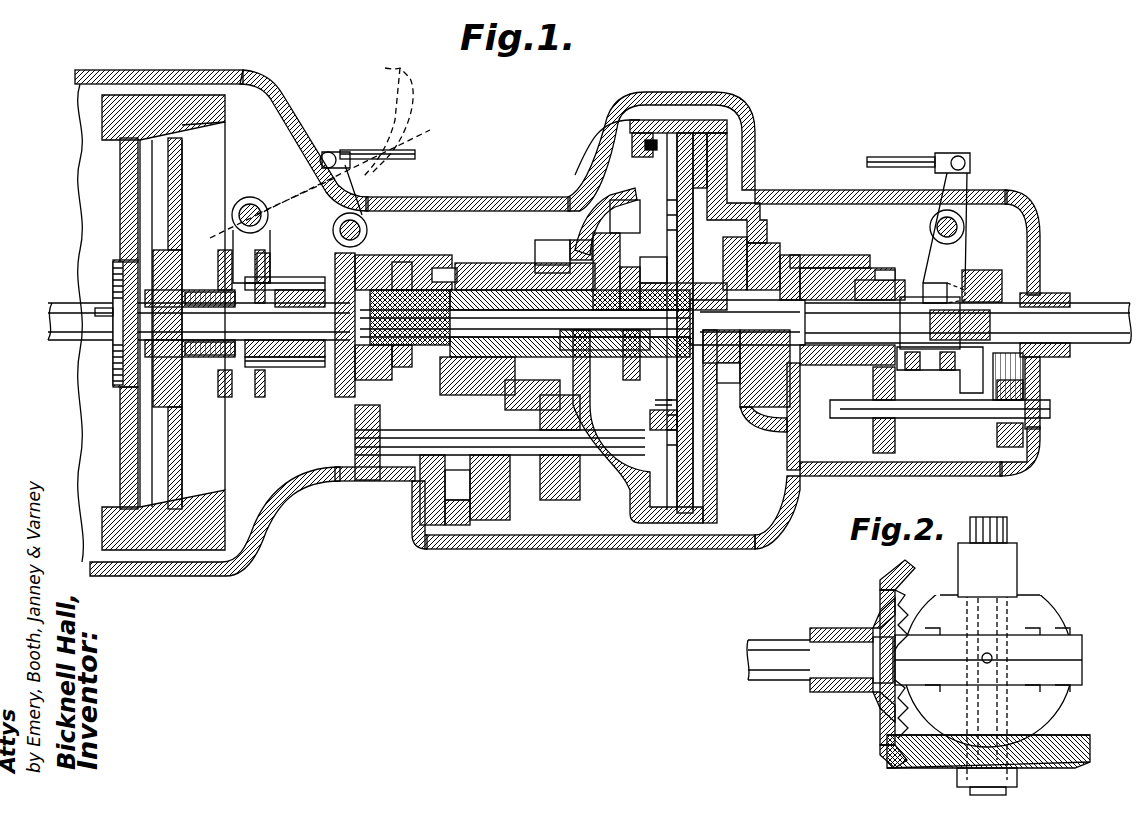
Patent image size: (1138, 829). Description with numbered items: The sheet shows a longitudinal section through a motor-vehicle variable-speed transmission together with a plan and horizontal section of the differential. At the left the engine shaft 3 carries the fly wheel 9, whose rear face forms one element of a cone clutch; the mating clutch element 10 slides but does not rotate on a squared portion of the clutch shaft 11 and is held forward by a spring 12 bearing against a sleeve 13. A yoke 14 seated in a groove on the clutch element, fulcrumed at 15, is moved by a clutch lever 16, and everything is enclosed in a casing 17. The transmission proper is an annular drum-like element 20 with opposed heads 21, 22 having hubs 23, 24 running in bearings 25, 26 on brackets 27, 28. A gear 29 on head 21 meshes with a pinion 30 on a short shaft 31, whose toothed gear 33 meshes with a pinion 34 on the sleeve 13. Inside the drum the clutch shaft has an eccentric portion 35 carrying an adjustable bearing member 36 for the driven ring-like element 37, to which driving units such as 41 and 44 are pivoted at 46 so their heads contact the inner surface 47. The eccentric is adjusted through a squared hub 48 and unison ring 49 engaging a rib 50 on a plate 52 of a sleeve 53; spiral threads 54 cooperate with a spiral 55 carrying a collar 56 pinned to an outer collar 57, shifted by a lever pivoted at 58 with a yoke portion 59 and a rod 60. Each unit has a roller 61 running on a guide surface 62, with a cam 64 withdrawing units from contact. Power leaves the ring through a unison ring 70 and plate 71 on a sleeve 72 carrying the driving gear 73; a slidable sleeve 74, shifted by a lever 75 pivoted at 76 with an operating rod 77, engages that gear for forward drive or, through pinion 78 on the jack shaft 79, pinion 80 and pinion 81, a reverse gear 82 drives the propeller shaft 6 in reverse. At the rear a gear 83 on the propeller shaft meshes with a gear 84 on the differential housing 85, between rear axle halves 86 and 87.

In FIG. 1, the engine shaft 3 is at (66, 304).
In FIG. 1, the propeller shaft 6 is at (1090, 312).
In FIG. 2, the propeller shaft 6 is at (775, 670).
In FIG. 1, the fly wheel 9 is at (152, 95).
In FIG. 1, the clutch element 10 is at (212, 138).
In FIG. 1, the clutch shaft 11 is at (298, 300).
In FIG. 1, the spring 12 is at (213, 288).
In FIG. 1, the sleeve 13 is at (262, 372).
In FIG. 1, the yoke 14 is at (262, 243).
In FIG. 1, the fulcrum 15 is at (250, 204).
In FIG. 1, the clutch lever 16 is at (410, 78).
In FIG. 1, the casing 17 is at (620, 108).
In FIG. 1, the annular drum-like element 20 is at (700, 118).
In FIG. 1, the head 21 is at (605, 175).
In FIG. 1, the head 22 is at (715, 175).
In FIG. 1, the hub 23 is at (490, 288).
In FIG. 1, the hub 24 is at (825, 290).
In FIG. 1, the bearing 25 is at (514, 272).
In FIG. 1, the bearing 26 is at (850, 268).
In FIG. 1, the bracket 27 is at (508, 505).
In FIG. 1, the bracket 28 is at (795, 438).
In FIG. 1, the gear 29 is at (548, 262).
In FIG. 1, the pinion 30 is at (562, 500).
In FIG. 1, the short shaft 31 is at (520, 440).
In FIG. 1, the toothed gear 33 is at (455, 525).
In FIG. 1, the pinion 34 is at (440, 268).
In FIG. 1, the eccentric portion 35 is at (700, 320).
In FIG. 1, the adjustable bearing member 36 is at (785, 258).
In FIG. 1, the ring-like element 37 is at (745, 388).
In FIG. 1, the driving unit 41 is at (690, 468).
In FIG. 1, the driving unit 44 is at (712, 200).
In FIG. 1, the pivotal connection 46 is at (722, 272).
In FIG. 1, the inner surface 47 is at (700, 145).
In FIG. 1, the squared hub 48 is at (630, 338).
In FIG. 1, the unison ring 49 is at (630, 245).
In FIG. 1, the rib 50 is at (575, 190).
In FIG. 1, the plate 52 is at (578, 250).
In FIG. 1, the sleeve 53 is at (490, 355).
In FIG. 1, the spiral threads 54 is at (462, 295).
In FIG. 1, the spiral 55 is at (420, 300).
In FIG. 1, the collar 56 is at (330, 352).
In FIG. 1, the outer collar 57 is at (340, 385).
In FIG. 1, the lever pivot 58 is at (354, 196).
In FIG. 1, the yoke portion 59 is at (367, 238).
In FIG. 1, the rod 60 is at (400, 150).
In FIG. 1, the roller 61 is at (650, 425).
In FIG. 1, the annular guide surface 62 is at (652, 220).
In FIG. 1, the cam 64 is at (636, 470).
In FIG. 1, the unison ring 70 is at (772, 243).
In FIG. 1, the plate 71 is at (752, 425).
In FIG. 1, the sleeve 72 is at (862, 292).
In FIG. 1, the driving gear 73 is at (892, 270).
In FIG. 1, the slidable sleeve 74 is at (920, 360).
In FIG. 1, the lever 75 is at (960, 292).
In FIG. 1, the pivot 76 is at (962, 232).
In FIG. 1, the operating rod 77 is at (900, 157).
In FIG. 1, the pinion 78 is at (893, 440).
In FIG. 1, the jack shaft 79 is at (945, 418).
In FIG. 1, the pinion 80 is at (1002, 440).
In FIG. 1, the pinion 81 is at (993, 372).
In FIG. 1, the reverse gear 82 is at (980, 282).
In FIG. 2, the gear 83 is at (903, 572).
In FIG. 2, the gear 84 is at (905, 764).
In FIG. 2, the differential housing 85 is at (1048, 694).
In FIG. 2, the rear axle half 86 is at (1007, 528).
In FIG. 2, the rear axle half 87 is at (1006, 788).